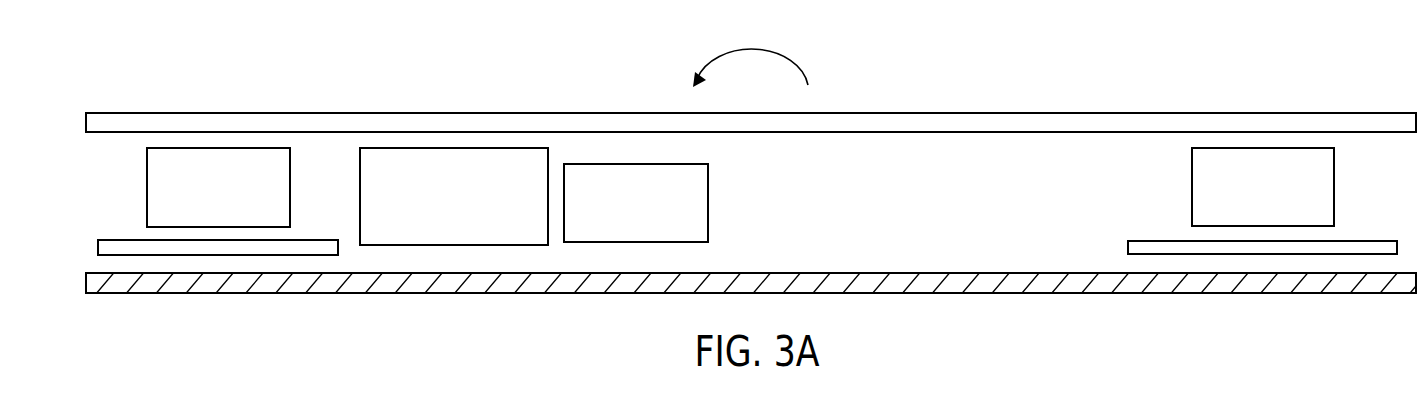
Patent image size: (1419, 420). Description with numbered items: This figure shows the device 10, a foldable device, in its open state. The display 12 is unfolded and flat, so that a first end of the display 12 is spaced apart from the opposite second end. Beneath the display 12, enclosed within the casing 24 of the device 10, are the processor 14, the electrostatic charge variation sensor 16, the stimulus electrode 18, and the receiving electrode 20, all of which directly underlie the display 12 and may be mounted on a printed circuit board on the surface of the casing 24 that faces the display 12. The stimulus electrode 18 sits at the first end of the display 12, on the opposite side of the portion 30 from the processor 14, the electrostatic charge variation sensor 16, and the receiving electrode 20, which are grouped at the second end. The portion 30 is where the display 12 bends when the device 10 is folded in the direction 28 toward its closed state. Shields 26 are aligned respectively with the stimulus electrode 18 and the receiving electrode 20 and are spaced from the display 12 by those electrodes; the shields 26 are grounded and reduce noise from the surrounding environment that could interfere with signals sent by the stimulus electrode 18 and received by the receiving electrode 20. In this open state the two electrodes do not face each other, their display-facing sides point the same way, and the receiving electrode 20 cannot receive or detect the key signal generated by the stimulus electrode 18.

The device 10 is at (203, 61).
The display 12 is at (1373, 118).
The processor 14 is at (637, 164).
The electrostatic charge variation sensor 16 is at (460, 148).
The stimulus electrode 18 is at (1262, 148).
The receiving electrode 20 is at (245, 148).
The casing 24 is at (1372, 283).
The shields 26 is at (218, 255).
The direction 28 is at (750, 43).
The portion 30 is at (772, 102).